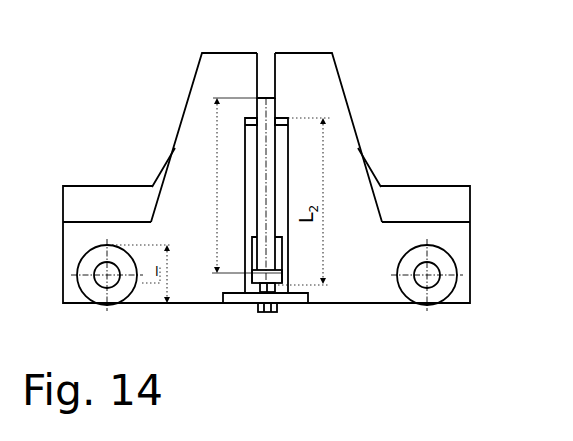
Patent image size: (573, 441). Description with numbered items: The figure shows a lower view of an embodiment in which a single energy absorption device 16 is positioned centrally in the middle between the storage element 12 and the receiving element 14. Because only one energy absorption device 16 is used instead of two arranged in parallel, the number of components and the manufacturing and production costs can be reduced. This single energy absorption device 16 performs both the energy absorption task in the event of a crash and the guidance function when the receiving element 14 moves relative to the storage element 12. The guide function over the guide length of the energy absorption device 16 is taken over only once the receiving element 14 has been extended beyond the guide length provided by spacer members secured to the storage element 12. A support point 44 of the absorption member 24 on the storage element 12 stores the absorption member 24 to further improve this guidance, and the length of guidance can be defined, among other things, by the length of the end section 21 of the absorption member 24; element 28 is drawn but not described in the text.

The storage element 12 is at (453, 237).
The receiving element 14 is at (422, 205).
The energy absorption device 16 is at (281, 261).
The end section 21 is at (217, 173).
The absorption member 24 is at (270, 140).
The fastening nut 28 is at (276, 293).
The support point 44 is at (282, 100).